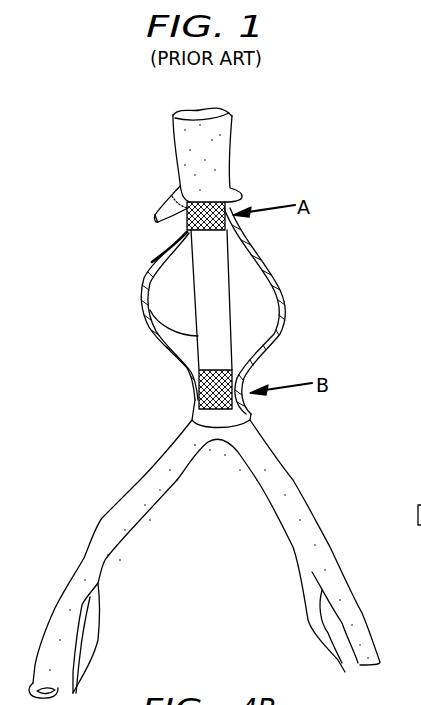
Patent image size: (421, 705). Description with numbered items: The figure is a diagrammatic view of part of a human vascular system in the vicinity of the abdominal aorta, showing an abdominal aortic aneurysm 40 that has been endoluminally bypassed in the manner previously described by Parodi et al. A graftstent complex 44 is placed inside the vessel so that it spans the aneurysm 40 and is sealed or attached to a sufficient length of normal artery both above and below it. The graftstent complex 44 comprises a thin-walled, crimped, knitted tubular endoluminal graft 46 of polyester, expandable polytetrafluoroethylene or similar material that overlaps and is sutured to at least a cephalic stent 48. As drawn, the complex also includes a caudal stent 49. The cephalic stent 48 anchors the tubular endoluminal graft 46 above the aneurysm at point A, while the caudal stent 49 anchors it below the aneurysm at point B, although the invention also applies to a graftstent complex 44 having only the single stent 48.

The aortic aneurysm 40 is at (287, 322).
The graftstent complex 44 is at (197, 293).
The tubular endoluminal graft 46 is at (150, 310).
The cephalic stent 48 is at (178, 192).
The caudal stent 49 is at (199, 392).